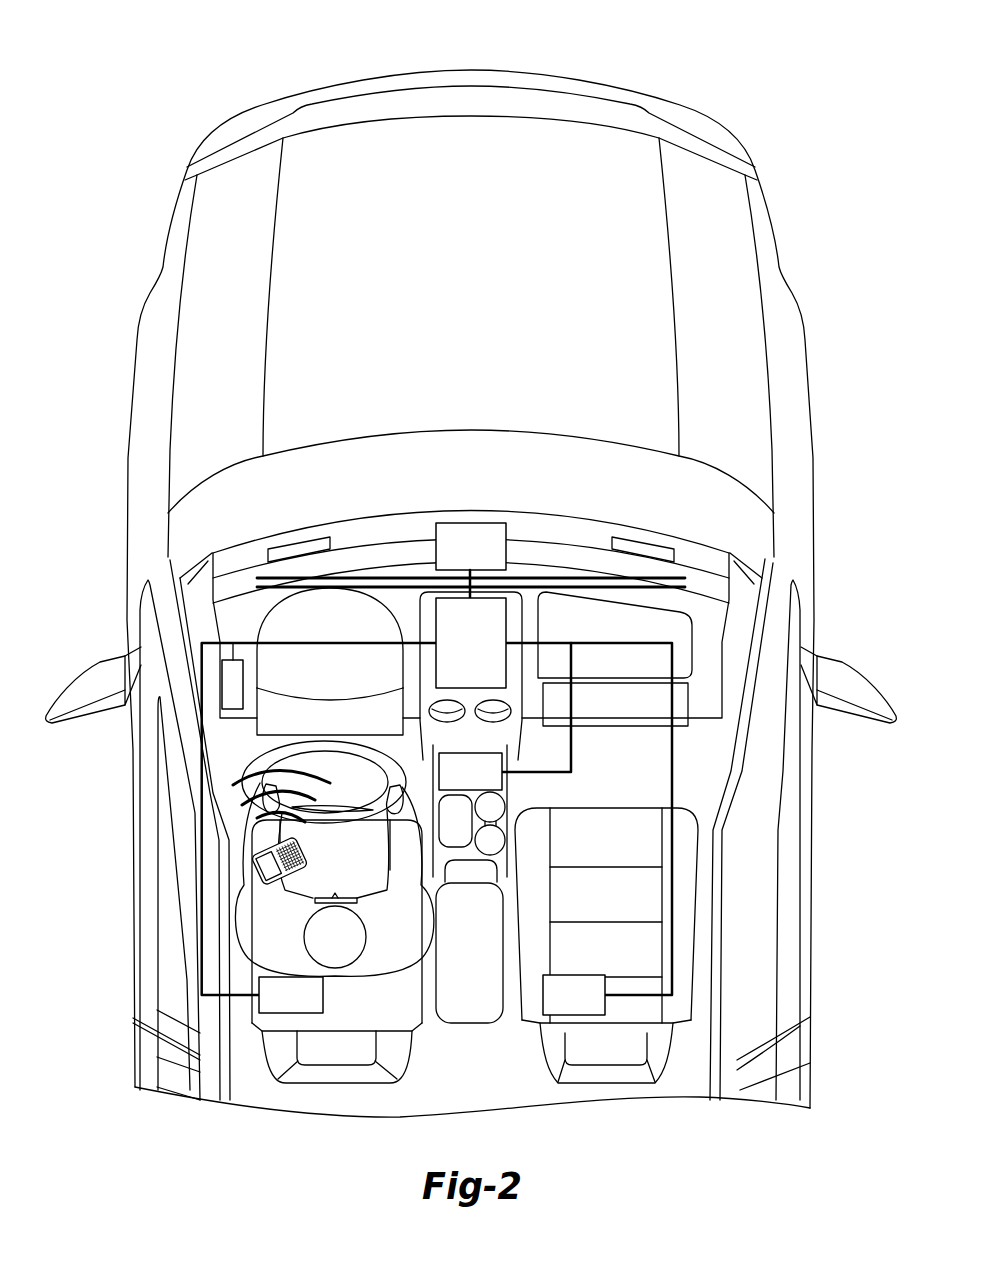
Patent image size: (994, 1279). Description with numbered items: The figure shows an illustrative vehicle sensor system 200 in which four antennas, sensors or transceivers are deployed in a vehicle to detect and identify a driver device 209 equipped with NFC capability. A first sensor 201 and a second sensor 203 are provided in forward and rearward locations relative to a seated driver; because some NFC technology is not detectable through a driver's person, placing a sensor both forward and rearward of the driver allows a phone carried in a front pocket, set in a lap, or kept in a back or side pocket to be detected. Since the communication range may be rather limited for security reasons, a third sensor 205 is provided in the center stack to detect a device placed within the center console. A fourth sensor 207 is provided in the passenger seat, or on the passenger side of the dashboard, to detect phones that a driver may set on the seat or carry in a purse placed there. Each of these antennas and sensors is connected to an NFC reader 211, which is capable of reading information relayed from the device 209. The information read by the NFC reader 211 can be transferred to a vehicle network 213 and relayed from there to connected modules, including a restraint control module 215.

The vehicle sensor system 200 is at (238, 76).
The sensor 1 201 is at (323, 995).
The sensor 2 203 is at (243, 681).
The third sensor 205 is at (502, 781).
The fourth sensor 207 is at (543, 1003).
The device 209 is at (252, 875).
The NFC reader 211 is at (506, 621).
The vehicle network 213 is at (356, 578).
The restraint control module 215 is at (452, 523).